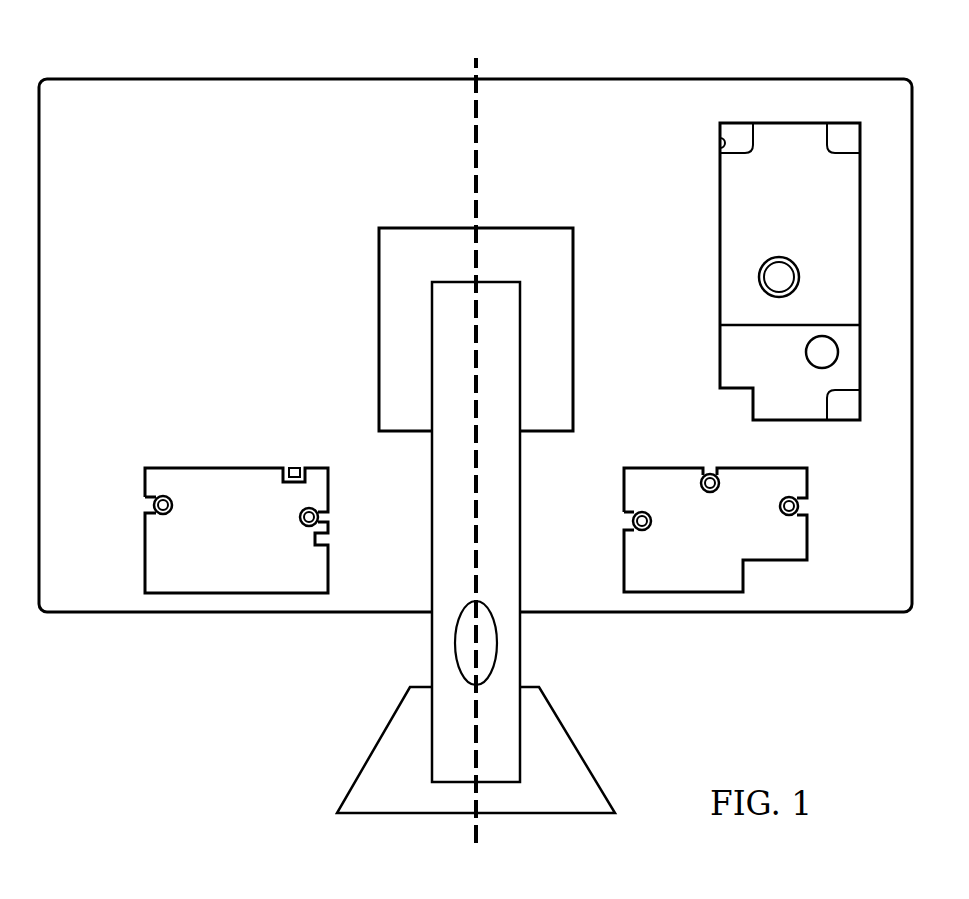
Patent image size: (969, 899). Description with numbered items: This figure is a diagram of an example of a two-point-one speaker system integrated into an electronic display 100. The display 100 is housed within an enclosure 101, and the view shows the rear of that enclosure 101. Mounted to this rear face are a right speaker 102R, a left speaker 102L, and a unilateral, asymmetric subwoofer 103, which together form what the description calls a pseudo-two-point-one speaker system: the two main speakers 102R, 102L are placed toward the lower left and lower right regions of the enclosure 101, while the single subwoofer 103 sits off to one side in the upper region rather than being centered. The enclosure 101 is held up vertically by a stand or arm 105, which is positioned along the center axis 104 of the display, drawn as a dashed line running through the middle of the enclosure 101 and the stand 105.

The electronic display 100 is at (166, 61).
The enclosure 101 is at (231, 288).
The right speaker 102R is at (145, 536).
The left speaker 102L is at (808, 534).
The unilateral, asymmetric subwoofer 103 is at (720, 255).
The horizontal center axis 104 is at (479, 138).
The stand or arm 105 is at (580, 746).